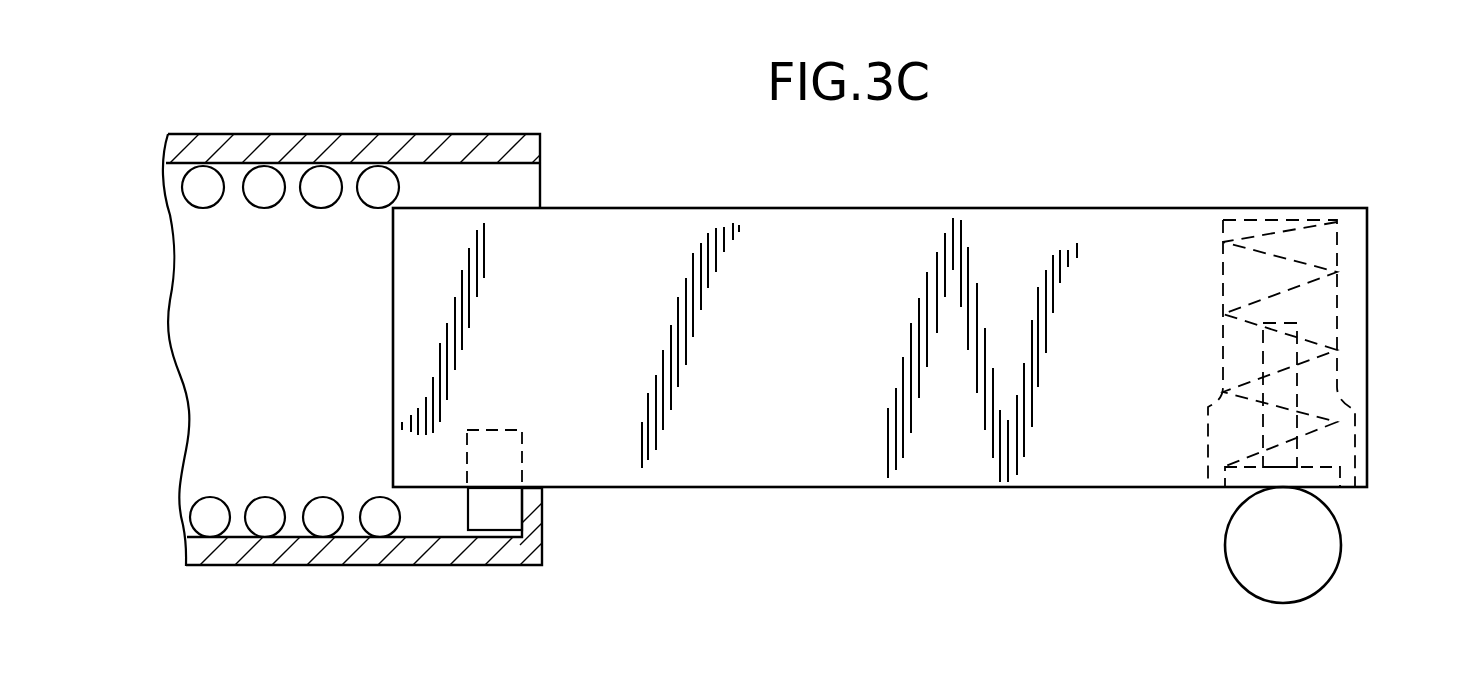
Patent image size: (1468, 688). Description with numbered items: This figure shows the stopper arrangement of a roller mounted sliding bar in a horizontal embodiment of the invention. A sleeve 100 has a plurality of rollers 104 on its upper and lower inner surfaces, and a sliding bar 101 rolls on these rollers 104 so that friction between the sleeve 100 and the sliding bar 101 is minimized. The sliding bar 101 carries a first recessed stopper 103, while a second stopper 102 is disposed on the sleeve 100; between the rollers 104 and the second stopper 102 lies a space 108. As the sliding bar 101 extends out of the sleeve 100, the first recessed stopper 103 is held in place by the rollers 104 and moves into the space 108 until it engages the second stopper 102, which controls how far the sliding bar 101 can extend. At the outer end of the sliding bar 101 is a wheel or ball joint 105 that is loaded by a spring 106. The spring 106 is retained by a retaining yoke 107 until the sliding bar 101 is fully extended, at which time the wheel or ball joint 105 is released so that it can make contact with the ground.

The sleeve 100 is at (493, 132).
The sliding bar 101 is at (1367, 237).
The second stopper 102 is at (542, 548).
The first recessed stopper 103 is at (507, 518).
The rollers 104 is at (266, 177).
The wheel or ball joint 105 is at (1240, 578).
The spring 106 is at (1313, 337).
The retaining yoke 107 is at (1343, 475).
The space 108 is at (433, 517).